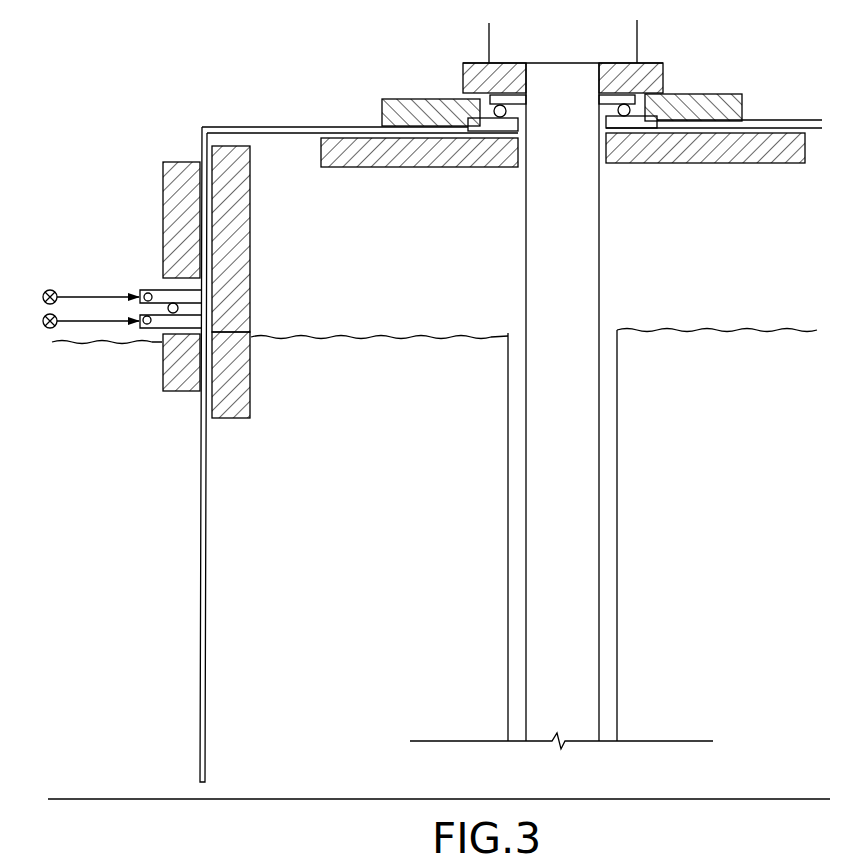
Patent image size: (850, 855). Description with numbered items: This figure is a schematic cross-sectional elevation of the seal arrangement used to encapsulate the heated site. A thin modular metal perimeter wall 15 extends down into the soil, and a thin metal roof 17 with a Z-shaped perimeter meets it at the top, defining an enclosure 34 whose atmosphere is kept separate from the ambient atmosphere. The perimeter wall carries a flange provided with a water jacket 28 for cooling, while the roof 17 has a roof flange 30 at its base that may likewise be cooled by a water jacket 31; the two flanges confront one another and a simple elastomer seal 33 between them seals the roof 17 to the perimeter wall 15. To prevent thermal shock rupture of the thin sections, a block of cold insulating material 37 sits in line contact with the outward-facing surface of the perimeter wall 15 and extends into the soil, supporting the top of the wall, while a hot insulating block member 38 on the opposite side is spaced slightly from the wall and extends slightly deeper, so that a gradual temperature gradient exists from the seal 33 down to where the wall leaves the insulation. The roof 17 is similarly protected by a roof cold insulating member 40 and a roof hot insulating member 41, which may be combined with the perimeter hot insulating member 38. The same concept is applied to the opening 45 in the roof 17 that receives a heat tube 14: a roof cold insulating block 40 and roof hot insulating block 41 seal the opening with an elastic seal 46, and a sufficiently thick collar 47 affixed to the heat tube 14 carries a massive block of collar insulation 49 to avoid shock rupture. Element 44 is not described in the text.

The heat tube 14 is at (602, 270).
The perimeter wall 15 is at (222, 547).
The roof 17 is at (270, 126).
The water jacket 28 is at (141, 326).
The roof flange 30 is at (157, 288).
The water jacket 31 is at (140, 288).
The elastomer seal 33 is at (187, 308).
The enclosure 34 is at (407, 279).
The cold insulating member 37 is at (162, 383).
The hot insulating block member 38 is at (252, 382).
The roof cold insulating member 40 is at (380, 102).
The roof hot insulating member 41 is at (252, 216).
The flange plate 44 is at (407, 168).
The opening 45 is at (629, 124).
The elastic seal 46 is at (491, 106).
The collar 47 is at (638, 93).
The collar insulation 49 is at (648, 61).